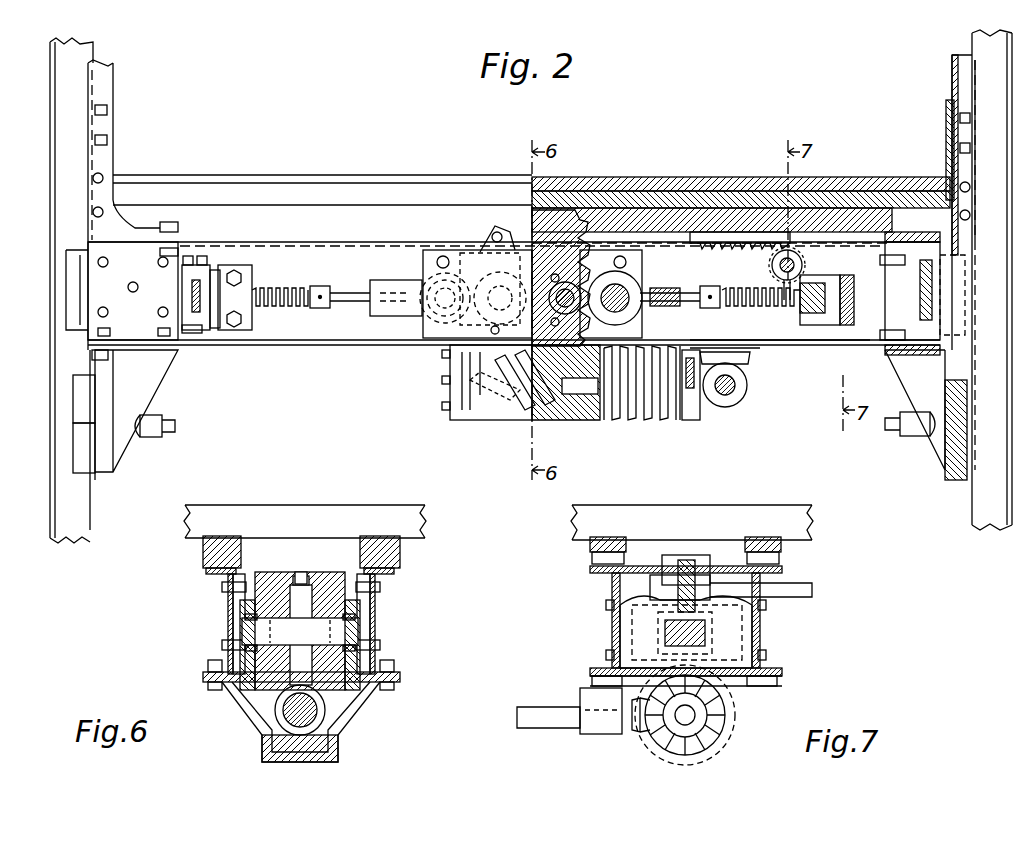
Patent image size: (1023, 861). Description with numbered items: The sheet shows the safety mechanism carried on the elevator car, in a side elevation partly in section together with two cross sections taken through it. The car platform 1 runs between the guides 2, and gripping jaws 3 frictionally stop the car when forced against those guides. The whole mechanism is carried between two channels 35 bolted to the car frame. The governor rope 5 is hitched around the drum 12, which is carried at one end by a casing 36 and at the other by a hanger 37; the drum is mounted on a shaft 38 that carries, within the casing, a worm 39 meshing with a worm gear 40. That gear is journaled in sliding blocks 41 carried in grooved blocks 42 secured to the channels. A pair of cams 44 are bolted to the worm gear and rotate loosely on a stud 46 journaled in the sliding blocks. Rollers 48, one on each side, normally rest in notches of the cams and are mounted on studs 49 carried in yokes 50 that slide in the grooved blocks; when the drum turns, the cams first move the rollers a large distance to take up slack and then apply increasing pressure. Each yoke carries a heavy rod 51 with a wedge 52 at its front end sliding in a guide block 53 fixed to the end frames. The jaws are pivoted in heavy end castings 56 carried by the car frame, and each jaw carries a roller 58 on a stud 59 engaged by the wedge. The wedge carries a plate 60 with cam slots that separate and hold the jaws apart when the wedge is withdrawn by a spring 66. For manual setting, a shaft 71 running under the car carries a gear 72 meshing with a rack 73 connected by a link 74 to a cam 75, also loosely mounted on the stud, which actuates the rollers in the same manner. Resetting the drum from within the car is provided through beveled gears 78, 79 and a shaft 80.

In FIG. 2, the car platform 1 is at (300, 192).
In FIG. 6, the car platform 1 is at (305, 521).
In FIG. 7, the car platform 1 is at (692, 522).
In FIG. 2, the guides 2 is at (531, 286).
In FIG. 2, the gripping jaws 3 is at (80, 282).
In FIG. 2, the rope 5 is at (655, 420).
In FIG. 2, the drum 12 is at (605, 420).
In FIG. 2, the channels 35 is at (340, 250).
In FIG. 6, the channels 35 is at (233, 622).
In FIG. 7, the channels 35 is at (612, 632).
In FIG. 2, the casing 36 is at (485, 415).
In FIG. 6, the casing 36 is at (365, 710).
In FIG. 2, the hanger 37 is at (750, 345).
In FIG. 7, the hanger 37 is at (715, 688).
In FIG. 2, the shaft 38 is at (575, 387).
In FIG. 6, the shaft 38 is at (278, 740).
In FIG. 7, the shaft 38 is at (683, 718).
In FIG. 2, the worm 39 is at (535, 405).
In FIG. 6, the worm 39 is at (320, 725).
In FIG. 2, the worm gear 40 is at (575, 278).
In FIG. 6, the worm gear 40 is at (303, 574).
In FIG. 2, the sliding blocks 41 is at (500, 320).
In FIG. 6, the sliding blocks 41 is at (250, 655).
In FIG. 2, the grooved blocks 42 is at (470, 250).
In FIG. 6, the grooved blocks 42 is at (228, 604).
In FIG. 2, the cams 44 is at (480, 255).
In FIG. 6, the cams 44 is at (330, 580).
In FIG. 2, the stud 46 is at (500, 370).
In FIG. 6, the stud 46 is at (300, 632).
In FIG. 7, the stud 46 is at (685, 633).
In FIG. 2, the rollers 48 is at (425, 285).
In FIG. 2, the studs 49 is at (440, 300).
In FIG. 2, the yokes 50 is at (390, 318).
In FIG. 2, the rod 51 is at (515, 297).
In FIG. 2, the wedge 52 is at (216, 292).
In FIG. 2, the guide block 53 is at (810, 340).
In FIG. 2, the end castings 56 is at (915, 375).
In FIG. 2, the roller 58 is at (195, 292).
In FIG. 2, the stud 59 is at (190, 335).
In FIG. 2, the plate 60 is at (205, 265).
In FIG. 2, the spring 66 is at (526, 301).
In FIG. 2, the shaft 71 is at (800, 252).
In FIG. 7, the shaft 71 is at (790, 592).
In FIG. 2, the gear 72 is at (775, 250).
In FIG. 7, the gear 72 is at (700, 578).
In FIG. 2, the rack 73 is at (724, 240).
In FIG. 7, the rack 73 is at (686, 560).
In FIG. 2, the link 74 is at (628, 238).
In FIG. 6, the cam 75 is at (262, 682).
In FIG. 7, the cam 75 is at (686, 611).
In FIG. 2, the beveled gear 78 is at (690, 420).
In FIG. 2, the beveled gear 79 is at (738, 400).
In FIG. 7, the beveled gear 79 is at (638, 710).
In FIG. 2, the shaft 80 is at (724, 395).
In FIG. 7, the shaft 80 is at (538, 712).